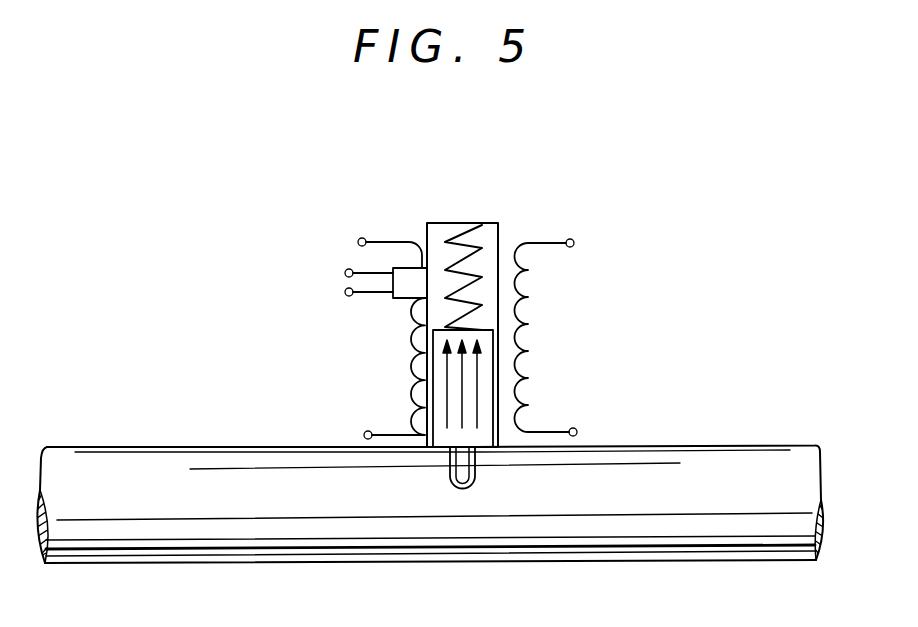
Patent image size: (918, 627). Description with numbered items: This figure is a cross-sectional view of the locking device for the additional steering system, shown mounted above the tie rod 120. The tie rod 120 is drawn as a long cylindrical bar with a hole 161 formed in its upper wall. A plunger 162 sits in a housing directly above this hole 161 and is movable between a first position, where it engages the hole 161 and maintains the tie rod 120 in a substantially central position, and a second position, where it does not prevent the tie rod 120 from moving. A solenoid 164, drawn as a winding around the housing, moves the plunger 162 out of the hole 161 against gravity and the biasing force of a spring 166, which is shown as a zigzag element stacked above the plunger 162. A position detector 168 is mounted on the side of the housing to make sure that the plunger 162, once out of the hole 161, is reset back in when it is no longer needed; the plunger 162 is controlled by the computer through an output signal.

The tie rod 120 is at (625, 560).
The hole 161 is at (476, 481).
The plunger 162 is at (488, 405).
The solenoid 164 is at (533, 320).
The spring 166 is at (465, 226).
The position detector 168 is at (400, 293).